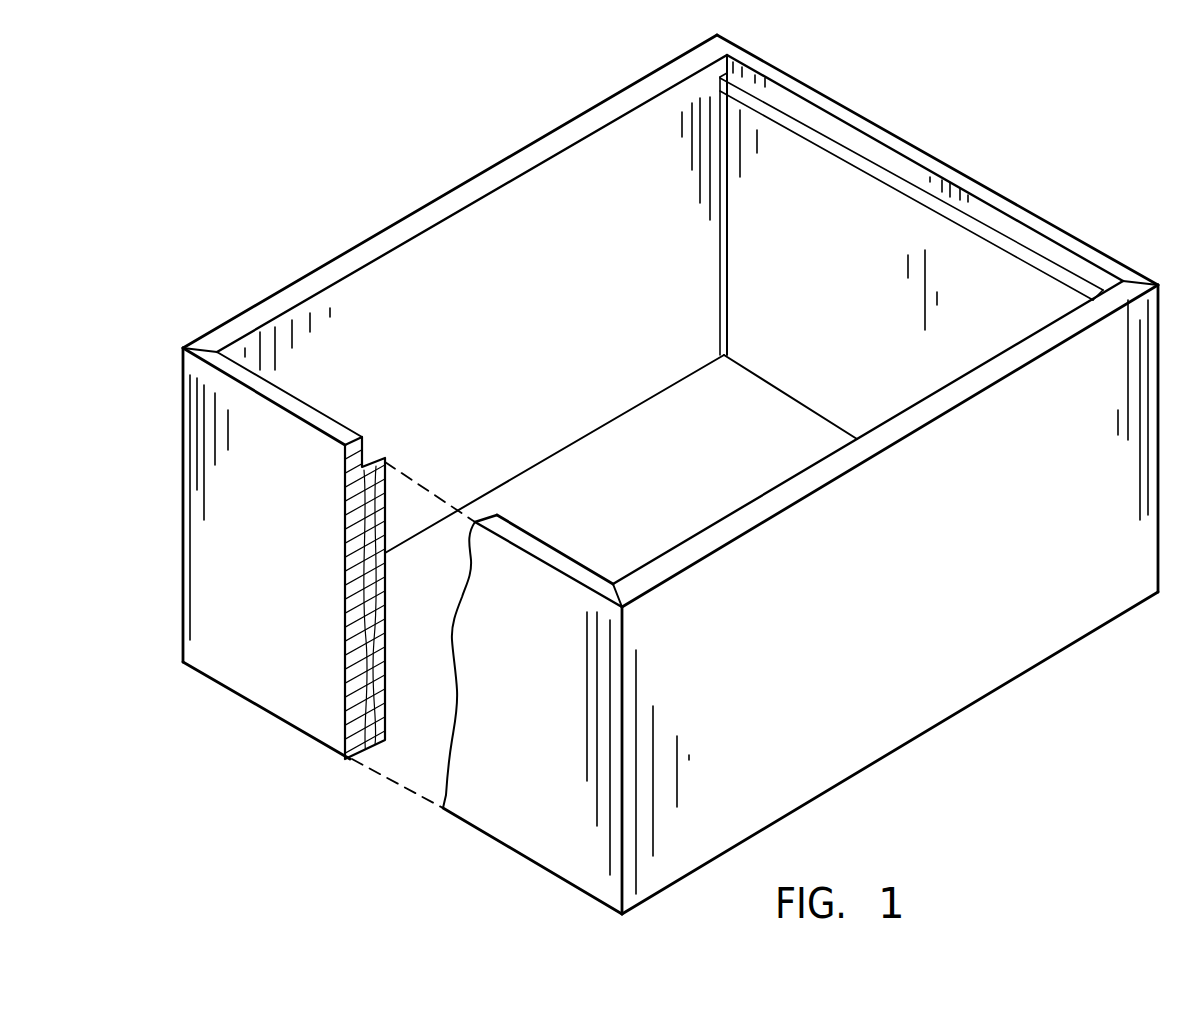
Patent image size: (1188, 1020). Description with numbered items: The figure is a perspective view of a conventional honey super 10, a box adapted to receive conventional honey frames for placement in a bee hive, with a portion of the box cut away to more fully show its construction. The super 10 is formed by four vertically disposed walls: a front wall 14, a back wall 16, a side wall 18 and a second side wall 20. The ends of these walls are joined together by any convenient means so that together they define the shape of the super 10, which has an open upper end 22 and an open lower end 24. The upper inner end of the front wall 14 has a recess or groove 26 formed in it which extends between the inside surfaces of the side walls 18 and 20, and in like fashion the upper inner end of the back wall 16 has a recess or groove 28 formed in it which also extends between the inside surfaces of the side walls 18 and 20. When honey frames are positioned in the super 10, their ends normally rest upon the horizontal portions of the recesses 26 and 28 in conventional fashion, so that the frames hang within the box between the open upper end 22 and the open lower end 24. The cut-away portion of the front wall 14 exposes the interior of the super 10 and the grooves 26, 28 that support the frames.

The honey super 10 is at (918, 130).
The front wall 14 is at (273, 605).
The back wall 16 is at (850, 315).
The side wall 18 is at (537, 321).
The side wall 20 is at (895, 622).
The open upper end 22 is at (607, 207).
The open lower end 24 is at (417, 771).
The recess or groove 26 is at (376, 452).
The recess or groove 28 is at (1000, 237).